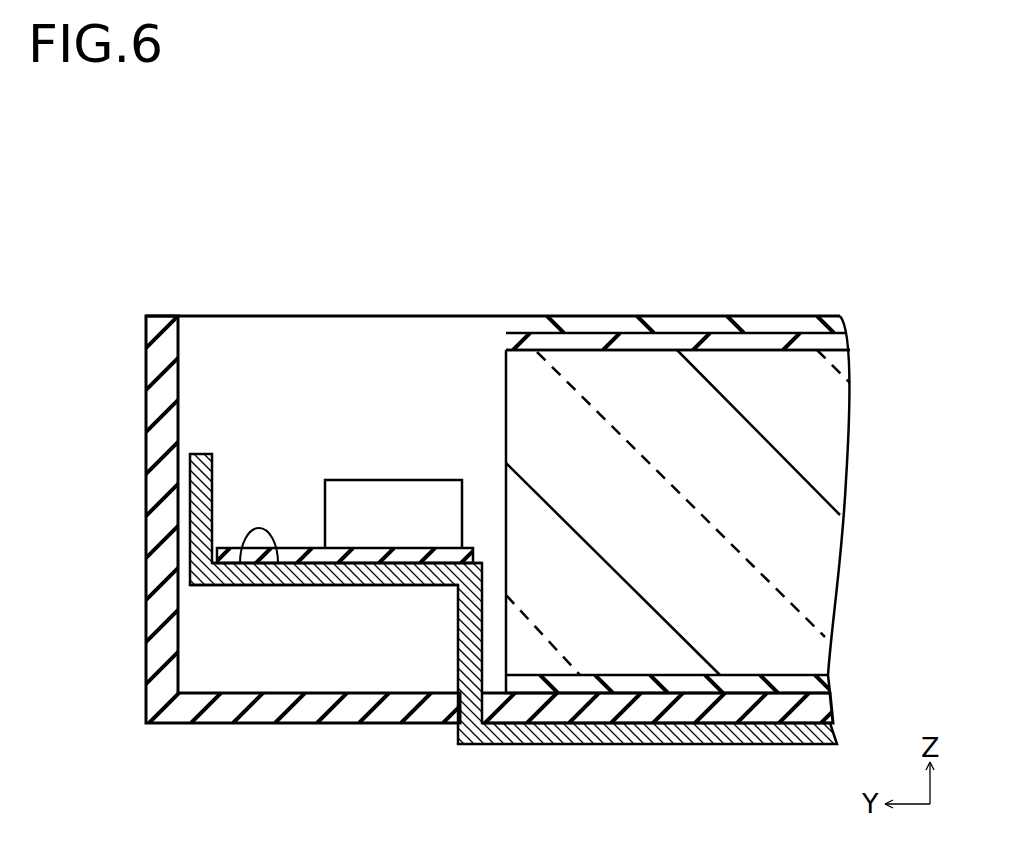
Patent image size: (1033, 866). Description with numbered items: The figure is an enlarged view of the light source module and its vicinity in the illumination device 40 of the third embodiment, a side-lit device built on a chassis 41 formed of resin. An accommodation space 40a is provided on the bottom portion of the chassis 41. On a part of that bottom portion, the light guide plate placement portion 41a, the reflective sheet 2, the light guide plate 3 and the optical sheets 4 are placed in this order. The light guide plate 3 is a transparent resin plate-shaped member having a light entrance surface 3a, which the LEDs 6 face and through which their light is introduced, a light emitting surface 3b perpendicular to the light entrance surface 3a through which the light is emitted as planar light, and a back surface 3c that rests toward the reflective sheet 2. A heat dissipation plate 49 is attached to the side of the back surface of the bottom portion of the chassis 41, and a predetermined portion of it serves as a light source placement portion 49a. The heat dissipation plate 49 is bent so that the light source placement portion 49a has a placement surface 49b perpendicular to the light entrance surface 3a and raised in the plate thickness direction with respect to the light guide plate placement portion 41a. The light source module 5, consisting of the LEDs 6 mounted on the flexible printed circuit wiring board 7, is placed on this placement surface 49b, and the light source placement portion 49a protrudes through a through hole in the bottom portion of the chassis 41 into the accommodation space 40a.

The reflective sheet 2 is at (830, 684).
The light guide plate 3 is at (827, 538).
The light entrance surface 3a is at (506, 405).
The light emitting surface 3b is at (665, 350).
The back surface 3c is at (800, 683).
The optical sheets 4 is at (835, 325).
The light source module 5 is at (280, 241).
The LED 6 is at (353, 507).
The flexible printed circuit wiring board 7 is at (317, 560).
The illumination device 40 is at (815, 268).
The accommodation space 40a is at (398, 417).
The chassis 41 is at (835, 712).
The light guide plate placement portion 41a is at (708, 717).
The heat dissipation plate 49 is at (522, 730).
The light source placement portion 49a is at (317, 577).
The placement surface 49b is at (242, 563).